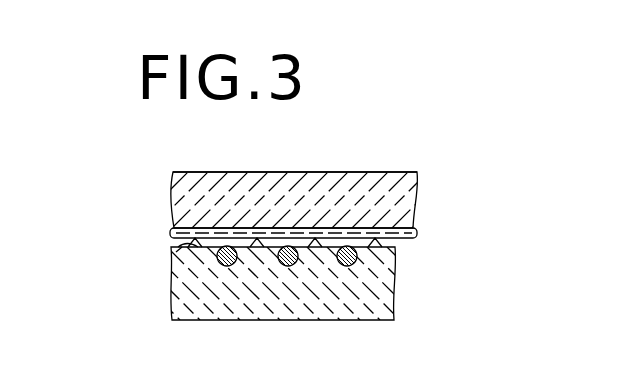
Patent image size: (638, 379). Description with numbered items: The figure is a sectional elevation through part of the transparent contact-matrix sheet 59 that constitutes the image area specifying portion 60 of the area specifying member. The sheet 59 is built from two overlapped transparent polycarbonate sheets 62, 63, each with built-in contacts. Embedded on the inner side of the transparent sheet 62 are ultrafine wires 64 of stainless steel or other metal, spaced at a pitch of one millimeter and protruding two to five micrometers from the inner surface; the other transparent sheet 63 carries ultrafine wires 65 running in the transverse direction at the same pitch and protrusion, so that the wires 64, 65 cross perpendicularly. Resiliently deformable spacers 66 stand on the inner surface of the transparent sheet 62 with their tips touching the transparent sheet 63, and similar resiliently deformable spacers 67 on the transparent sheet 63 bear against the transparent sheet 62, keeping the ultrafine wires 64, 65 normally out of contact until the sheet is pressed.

The sheet 59 is at (433, 212).
The image area specifying portion 60 is at (338, 170).
The transparent sheet 62 is at (385, 302).
The transparent sheet 63 is at (181, 200).
The ultrafine wires 64 is at (223, 267).
The ultrafine wires 65 is at (172, 234).
The resiliently deformable spacers 66 is at (176, 252).
The resiliently deformable spacers 67 is at (377, 242).